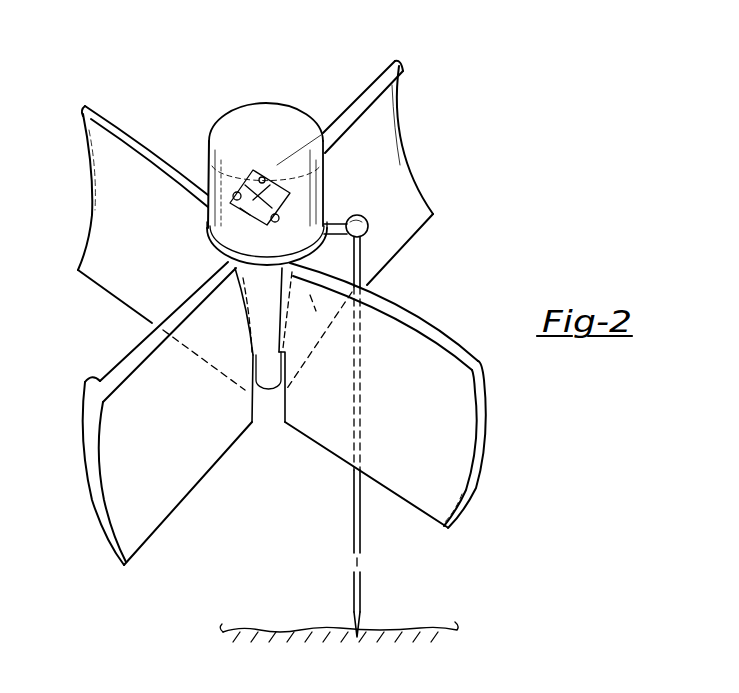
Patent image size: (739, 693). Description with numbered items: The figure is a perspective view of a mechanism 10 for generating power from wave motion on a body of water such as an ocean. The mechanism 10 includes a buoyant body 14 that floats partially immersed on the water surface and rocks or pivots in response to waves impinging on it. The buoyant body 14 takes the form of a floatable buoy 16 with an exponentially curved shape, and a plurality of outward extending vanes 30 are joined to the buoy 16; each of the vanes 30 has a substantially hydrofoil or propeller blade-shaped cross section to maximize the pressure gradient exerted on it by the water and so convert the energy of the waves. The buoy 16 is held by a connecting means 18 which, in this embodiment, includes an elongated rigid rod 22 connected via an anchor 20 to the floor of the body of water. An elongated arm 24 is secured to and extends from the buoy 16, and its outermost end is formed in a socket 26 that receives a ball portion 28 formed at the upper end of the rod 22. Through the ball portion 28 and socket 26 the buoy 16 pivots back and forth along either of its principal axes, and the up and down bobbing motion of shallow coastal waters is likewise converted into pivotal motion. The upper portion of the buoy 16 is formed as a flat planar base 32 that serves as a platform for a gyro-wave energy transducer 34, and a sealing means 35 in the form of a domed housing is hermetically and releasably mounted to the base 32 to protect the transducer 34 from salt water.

The mechanism 10 is at (190, 81).
The buoyant body 14 is at (138, 300).
The floatable buoy 16 is at (257, 324).
The connecting means 18 is at (388, 573).
The anchor 20 is at (354, 613).
The rigid rod 22 is at (355, 517).
The elongated arm 24 is at (333, 223).
The socket 26 is at (368, 215).
The ball portion 28 is at (364, 248).
The vanes 30 is at (108, 102).
The planar base 32 is at (207, 225).
The gyro-wave energy transducer 34 is at (254, 163).
The sealing means 35 is at (206, 134).